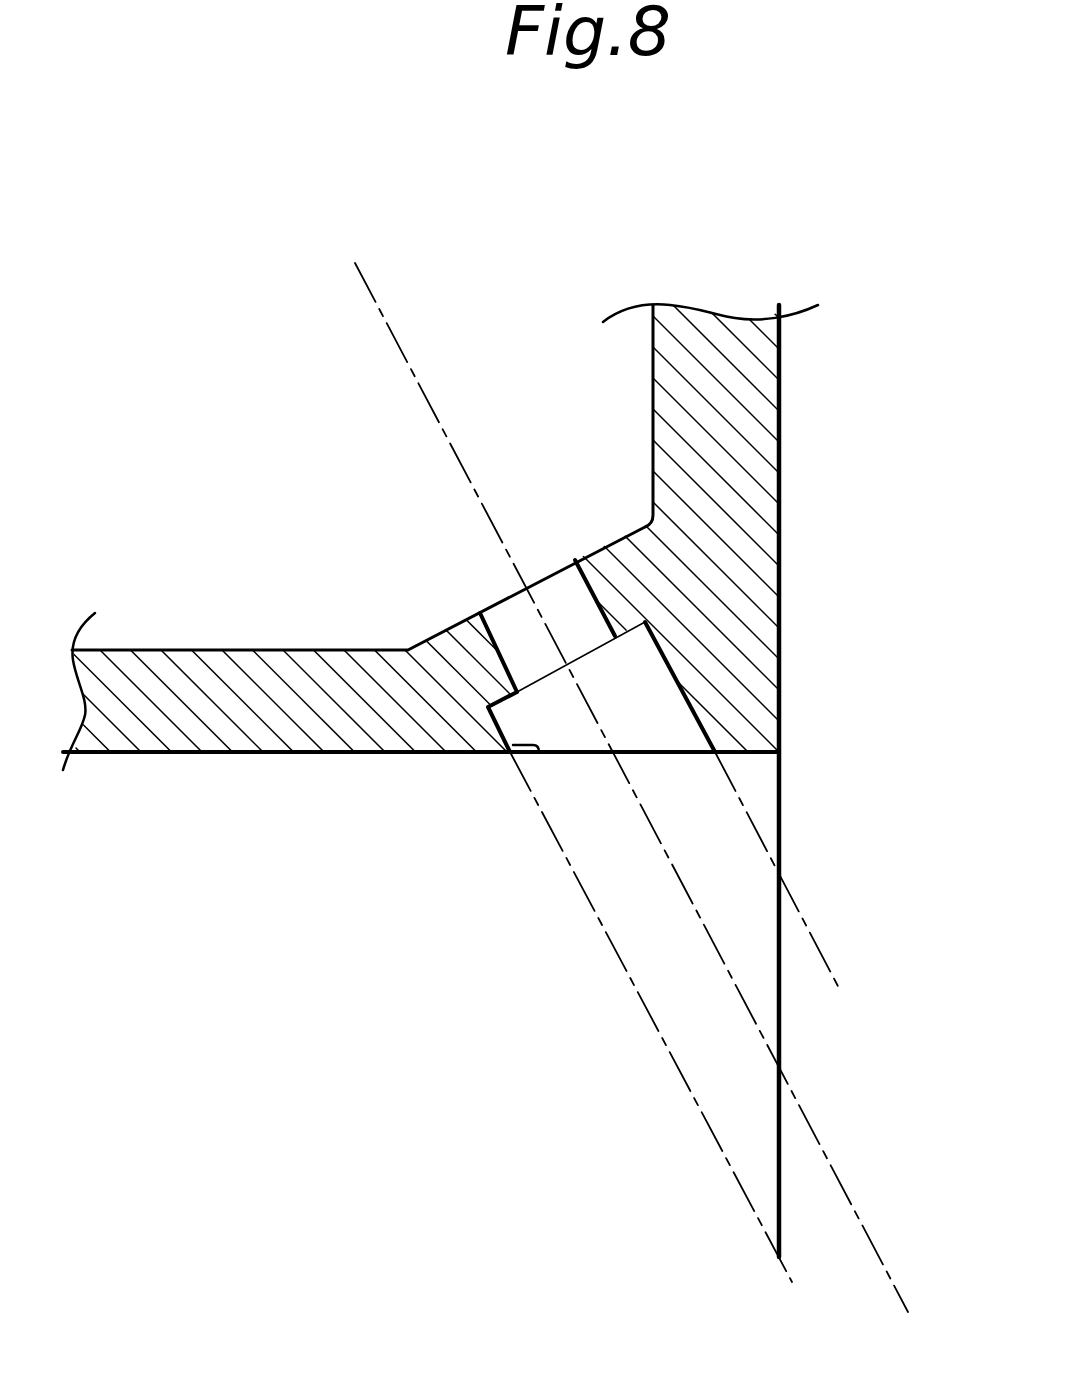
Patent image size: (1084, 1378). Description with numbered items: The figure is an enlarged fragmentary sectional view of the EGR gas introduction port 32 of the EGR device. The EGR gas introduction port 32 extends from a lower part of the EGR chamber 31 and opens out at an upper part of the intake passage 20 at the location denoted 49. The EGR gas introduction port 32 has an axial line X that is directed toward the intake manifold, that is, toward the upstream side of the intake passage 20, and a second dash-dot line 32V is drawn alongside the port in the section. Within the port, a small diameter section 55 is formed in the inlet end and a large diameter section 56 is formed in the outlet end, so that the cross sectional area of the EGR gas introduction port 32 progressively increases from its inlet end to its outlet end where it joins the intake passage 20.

The intake passage 20 is at (150, 753).
The EGR chamber 31 is at (175, 650).
The EGR gas introduction port 32 is at (532, 707).
The groove axis line 32V is at (632, 975).
The opening of the EGR gas introduction port 49 is at (539, 752).
The small diameter section 55 is at (583, 577).
The large diameter section 56 is at (690, 684).
The axial line X is at (395, 352).